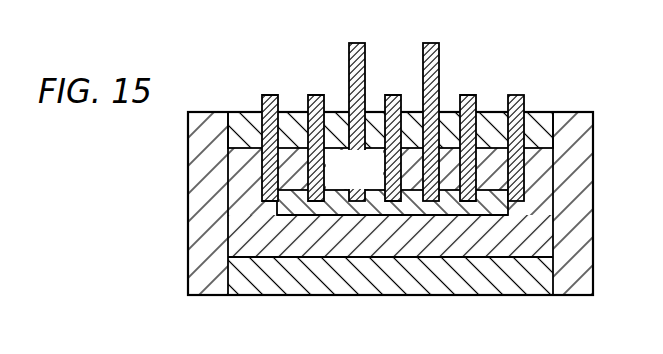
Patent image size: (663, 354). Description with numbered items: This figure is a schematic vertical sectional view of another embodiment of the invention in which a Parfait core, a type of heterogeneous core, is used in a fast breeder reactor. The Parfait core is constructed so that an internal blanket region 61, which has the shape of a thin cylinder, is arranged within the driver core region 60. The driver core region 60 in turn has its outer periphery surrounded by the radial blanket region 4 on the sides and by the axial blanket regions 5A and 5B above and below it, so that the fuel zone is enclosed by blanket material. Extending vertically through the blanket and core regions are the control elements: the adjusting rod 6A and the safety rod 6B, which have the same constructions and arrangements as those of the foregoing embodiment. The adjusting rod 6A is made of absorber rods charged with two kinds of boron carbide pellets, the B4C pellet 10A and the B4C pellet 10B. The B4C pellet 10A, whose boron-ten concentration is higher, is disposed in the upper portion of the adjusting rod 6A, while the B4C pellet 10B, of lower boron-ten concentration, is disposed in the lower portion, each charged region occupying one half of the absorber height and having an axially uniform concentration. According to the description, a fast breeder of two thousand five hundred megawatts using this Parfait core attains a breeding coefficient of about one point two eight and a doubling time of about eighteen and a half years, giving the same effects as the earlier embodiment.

The radial blanket region 4 is at (197, 215).
The axial blanket region 5A is at (243, 118).
The axial blanket region 5B is at (482, 277).
The adjusting rod 6A is at (524, 97).
The safety rod 6B is at (440, 58).
The B4C pellet 10A is at (316, 95).
The B4C pellet 10B is at (320, 175).
The driver core region 60 is at (327, 243).
The internal blanket region 61 is at (418, 204).